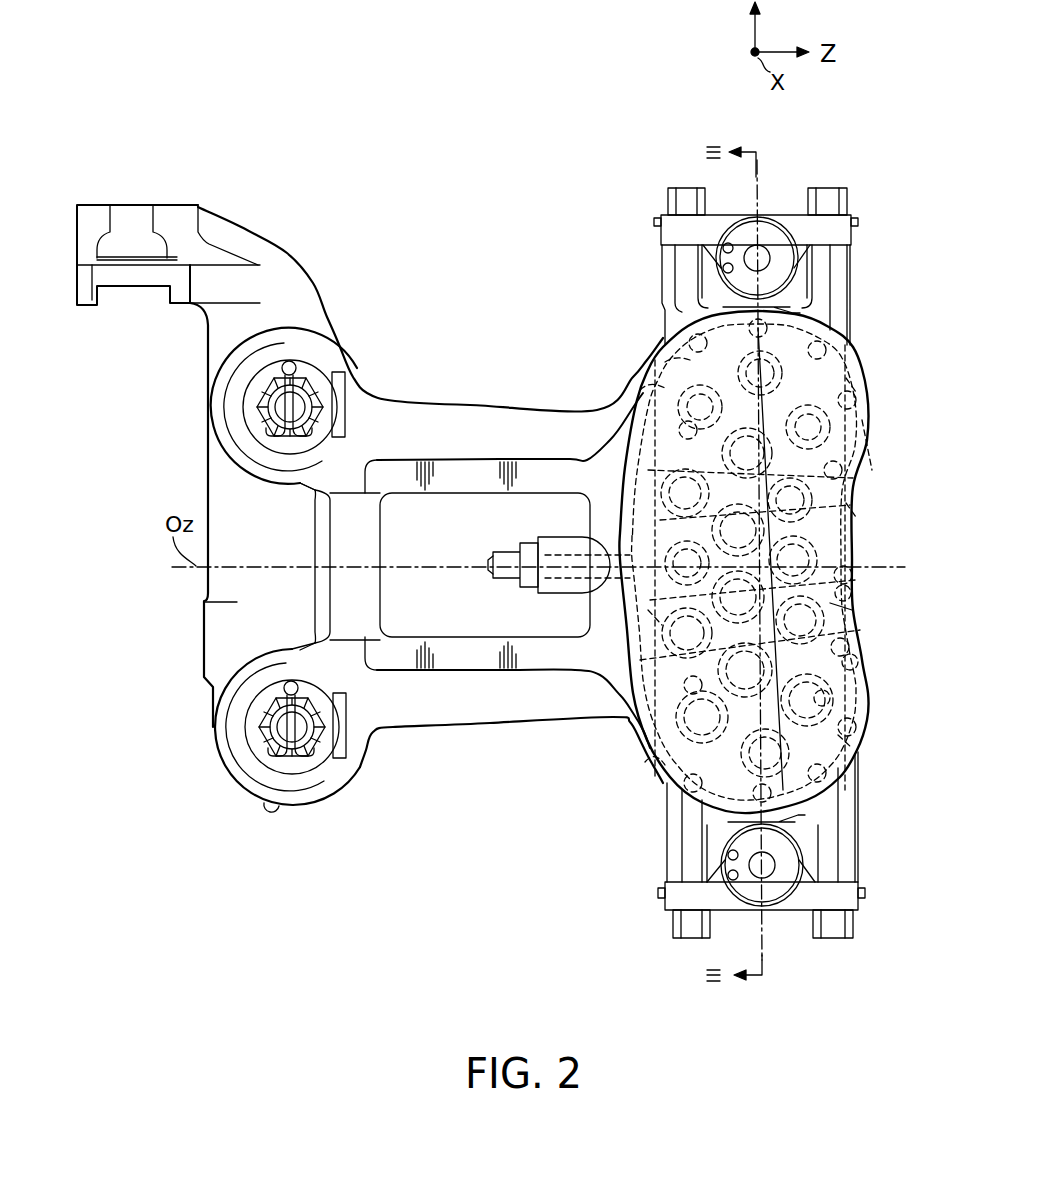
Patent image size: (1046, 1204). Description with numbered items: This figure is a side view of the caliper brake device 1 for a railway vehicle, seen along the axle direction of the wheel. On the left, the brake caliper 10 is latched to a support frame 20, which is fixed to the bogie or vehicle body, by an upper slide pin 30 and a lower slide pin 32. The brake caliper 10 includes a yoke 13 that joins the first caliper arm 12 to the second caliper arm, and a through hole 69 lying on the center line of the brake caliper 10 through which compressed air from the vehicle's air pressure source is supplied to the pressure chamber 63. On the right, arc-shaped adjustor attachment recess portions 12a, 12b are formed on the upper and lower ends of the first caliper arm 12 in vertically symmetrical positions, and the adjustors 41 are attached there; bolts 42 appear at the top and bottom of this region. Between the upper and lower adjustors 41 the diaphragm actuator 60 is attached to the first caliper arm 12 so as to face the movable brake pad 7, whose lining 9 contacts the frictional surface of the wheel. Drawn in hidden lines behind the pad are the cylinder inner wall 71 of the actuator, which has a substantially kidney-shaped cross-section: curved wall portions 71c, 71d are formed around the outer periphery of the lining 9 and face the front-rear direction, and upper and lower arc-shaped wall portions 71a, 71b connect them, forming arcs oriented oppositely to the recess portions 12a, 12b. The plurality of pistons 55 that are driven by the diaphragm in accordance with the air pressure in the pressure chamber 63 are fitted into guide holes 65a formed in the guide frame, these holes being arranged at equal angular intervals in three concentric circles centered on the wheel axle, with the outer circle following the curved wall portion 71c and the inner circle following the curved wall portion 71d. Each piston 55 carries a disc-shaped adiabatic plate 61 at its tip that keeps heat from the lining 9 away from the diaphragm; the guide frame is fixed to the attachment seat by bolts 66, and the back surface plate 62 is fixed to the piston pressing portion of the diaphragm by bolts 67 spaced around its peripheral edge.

The caliper brake device 1 is at (478, 268).
The movable brake pad 7 is at (866, 760).
The lining 9 is at (872, 445).
The brake caliper 10 is at (482, 733).
The first caliper arm 12 is at (470, 398).
The adjustor attachment recess portion 12a is at (795, 293).
The adjustor attachment recess portion 12b is at (790, 830).
The yoke 13 is at (368, 594).
The support frame 20 is at (178, 203).
The upper slide pin 30 is at (283, 408).
The lower slide pin 32 is at (285, 729).
The adjustor 41 is at (768, 237).
The bolt 42 is at (668, 197).
The piston 55 is at (855, 610).
The diaphragm actuator 60 is at (828, 376).
The adiabatic plate 61 is at (857, 590).
The back surface plate 62 is at (665, 362).
The pressure chamber 63 is at (645, 762).
The guide hole 65a is at (862, 660).
The bolt 66 is at (640, 390).
The bolt 67 is at (830, 697).
The through hole 69 is at (560, 575).
The cylinder inner wall 71 is at (712, 808).
The arc-shaped wall portion 71a is at (855, 383).
The arc-shaped wall portion 71b is at (835, 742).
The curved wall portion 71c is at (655, 618).
The curved wall portion 71d is at (852, 510).